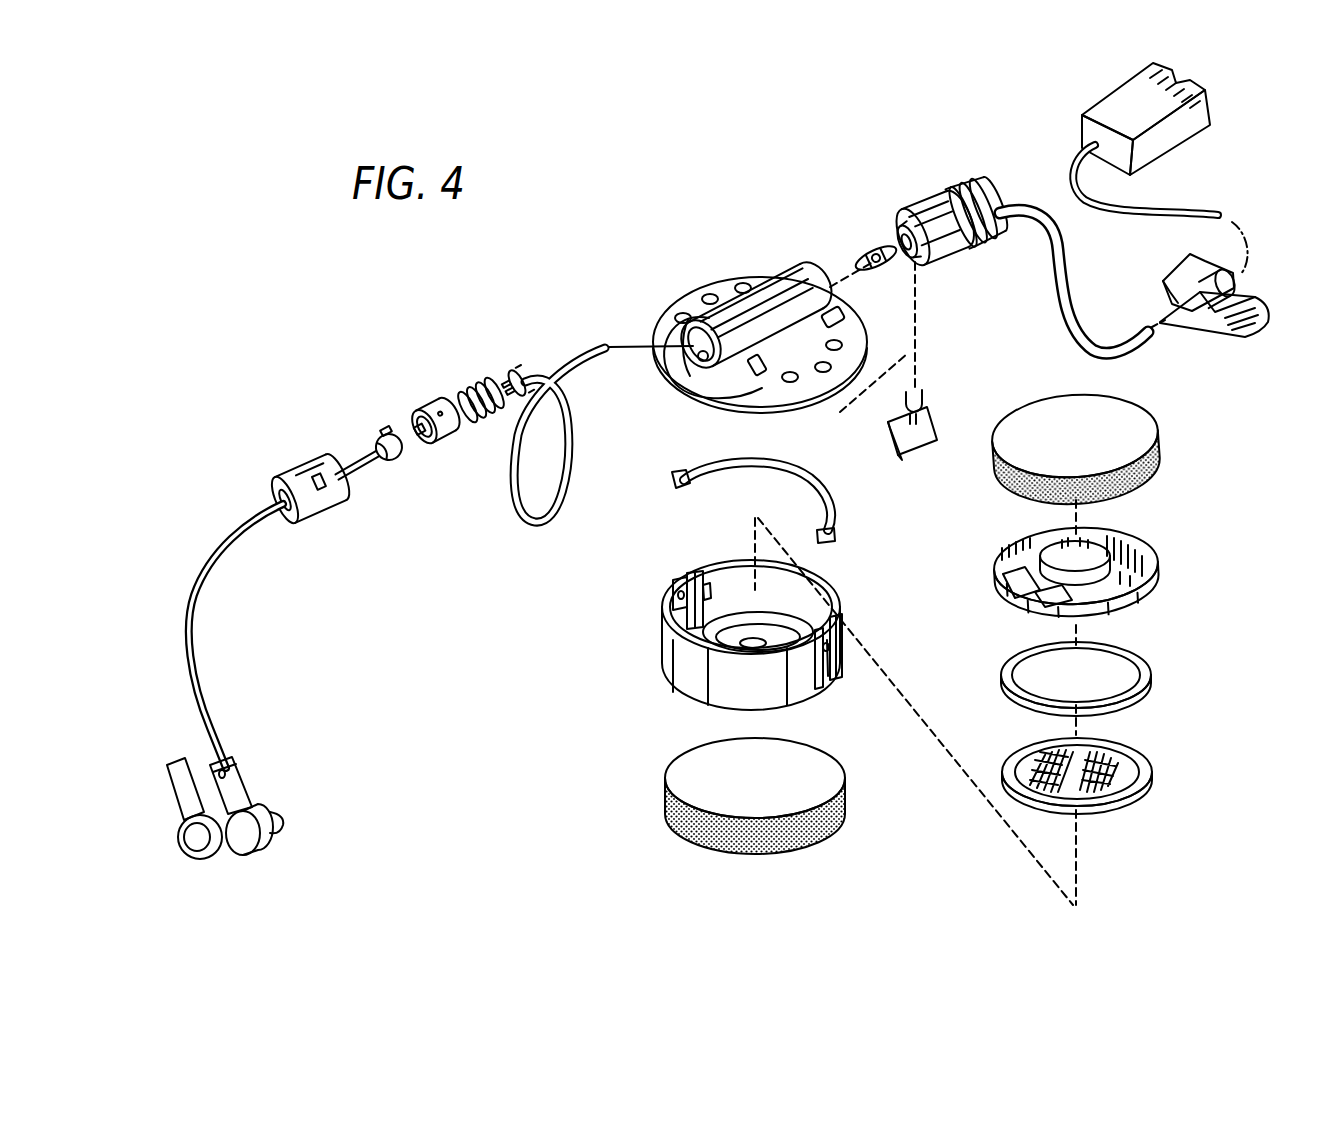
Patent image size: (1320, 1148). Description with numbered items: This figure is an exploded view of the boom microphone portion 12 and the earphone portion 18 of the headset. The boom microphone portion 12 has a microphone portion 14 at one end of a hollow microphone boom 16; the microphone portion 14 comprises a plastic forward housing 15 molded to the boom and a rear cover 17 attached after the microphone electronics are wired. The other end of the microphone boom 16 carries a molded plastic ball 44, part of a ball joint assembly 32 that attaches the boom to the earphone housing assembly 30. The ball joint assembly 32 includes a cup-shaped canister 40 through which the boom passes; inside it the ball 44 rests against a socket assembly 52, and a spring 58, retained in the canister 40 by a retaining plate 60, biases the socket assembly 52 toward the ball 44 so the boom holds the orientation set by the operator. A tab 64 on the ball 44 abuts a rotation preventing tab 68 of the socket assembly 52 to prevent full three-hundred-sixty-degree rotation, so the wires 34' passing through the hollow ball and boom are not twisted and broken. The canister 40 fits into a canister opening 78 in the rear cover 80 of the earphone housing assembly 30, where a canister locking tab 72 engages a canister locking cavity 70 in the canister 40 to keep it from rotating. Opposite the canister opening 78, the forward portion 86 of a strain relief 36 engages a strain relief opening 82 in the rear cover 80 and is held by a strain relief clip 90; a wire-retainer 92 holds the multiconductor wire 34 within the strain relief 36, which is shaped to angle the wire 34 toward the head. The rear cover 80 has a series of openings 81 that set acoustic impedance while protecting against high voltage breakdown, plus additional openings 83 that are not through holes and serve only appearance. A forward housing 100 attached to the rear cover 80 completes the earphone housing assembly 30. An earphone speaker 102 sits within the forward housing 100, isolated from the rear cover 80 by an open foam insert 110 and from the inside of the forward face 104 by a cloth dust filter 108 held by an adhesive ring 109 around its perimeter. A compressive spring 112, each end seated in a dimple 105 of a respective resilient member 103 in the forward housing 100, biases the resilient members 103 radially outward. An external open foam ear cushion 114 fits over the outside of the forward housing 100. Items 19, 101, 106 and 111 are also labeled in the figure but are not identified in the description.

The boom microphone portion 12 is at (230, 517).
The microphone portion 14 is at (273, 802).
The forward housing 15 is at (267, 850).
The microphone boom 16 is at (206, 578).
The rear cover 17 is at (205, 857).
The earphone portion 18 is at (917, 133).
The connector 19 is at (228, 768).
The earphone housing assembly 30 is at (633, 698).
The ball joint assembly 32 is at (517, 427).
The multiconductor wire 34 is at (1134, 226).
The wires 34' is at (594, 454).
The strain relief 36 is at (983, 185).
The cup-shaped canister 40 is at (315, 470).
The ball 44 is at (400, 452).
The socket assembly 52 is at (440, 400).
The spring 58 is at (477, 388).
The retaining plate 60 is at (517, 372).
The tab 64 is at (383, 428).
The rotation preventing tab 68 is at (412, 415).
The canister locking cavity 70 is at (330, 488).
The canister locking tab 72 is at (700, 360).
The canister opening 78 is at (720, 350).
The rear cover 80 is at (757, 277).
The openings 81 is at (711, 296).
The strain relief opening 82 is at (822, 282).
The additional openings 83 is at (842, 314).
The forward portion 86 is at (918, 258).
The strain relief clip 90 is at (920, 392).
The wire-retainer 92 is at (862, 248).
The forward housing 100 is at (838, 607).
The tabs 101 is at (678, 592).
The earphone speaker 102 is at (1140, 560).
The resilient member 103 is at (828, 672).
The forward face 104 is at (1150, 440).
The dimple 105 is at (704, 590).
The cup 106 is at (692, 716).
The cloth dust filter 108 is at (1120, 763).
The adhesive ring 109 is at (1135, 745).
The open foam insert 110 is at (1145, 660).
The tab 111 is at (838, 538).
The compressive spring 112 is at (830, 500).
The external open foam ear cushion 114 is at (830, 792).